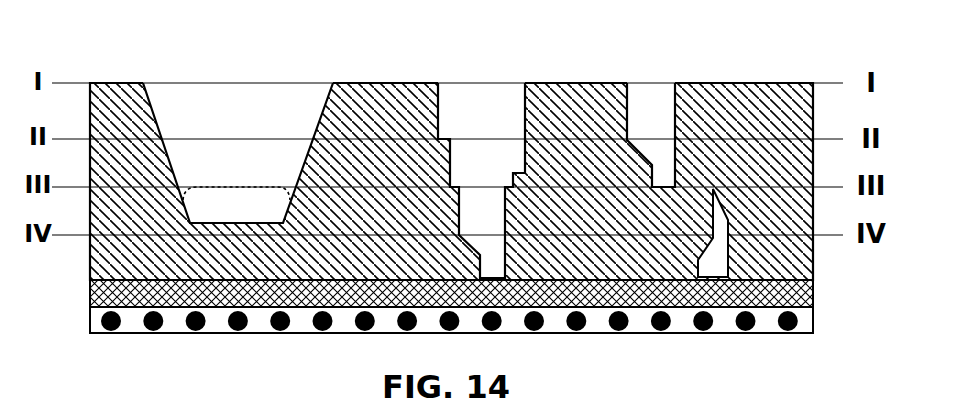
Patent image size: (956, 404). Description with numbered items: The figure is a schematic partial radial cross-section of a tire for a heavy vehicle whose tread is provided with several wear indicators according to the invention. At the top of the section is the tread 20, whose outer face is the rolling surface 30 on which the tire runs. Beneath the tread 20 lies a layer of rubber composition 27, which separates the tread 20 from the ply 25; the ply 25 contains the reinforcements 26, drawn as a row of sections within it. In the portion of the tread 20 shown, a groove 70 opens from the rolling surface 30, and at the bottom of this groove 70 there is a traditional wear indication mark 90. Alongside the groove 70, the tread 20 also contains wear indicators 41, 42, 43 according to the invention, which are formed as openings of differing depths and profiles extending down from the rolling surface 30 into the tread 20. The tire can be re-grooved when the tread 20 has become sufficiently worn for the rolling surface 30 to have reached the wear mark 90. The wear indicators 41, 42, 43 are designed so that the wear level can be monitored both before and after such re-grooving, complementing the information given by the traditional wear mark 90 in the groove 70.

The tread 20 is at (393, 223).
The ply 25 is at (97, 331).
The reinforcements 26 is at (194, 332).
The layer of rubber composition 27 is at (92, 294).
The rolling surface 30 is at (385, 70).
The wear indicator 41 is at (500, 127).
The wear indicator 42 is at (664, 129).
The wear indicator 43 is at (713, 233).
The groove 70 is at (247, 125).
The wear indication mark 90 is at (248, 219).